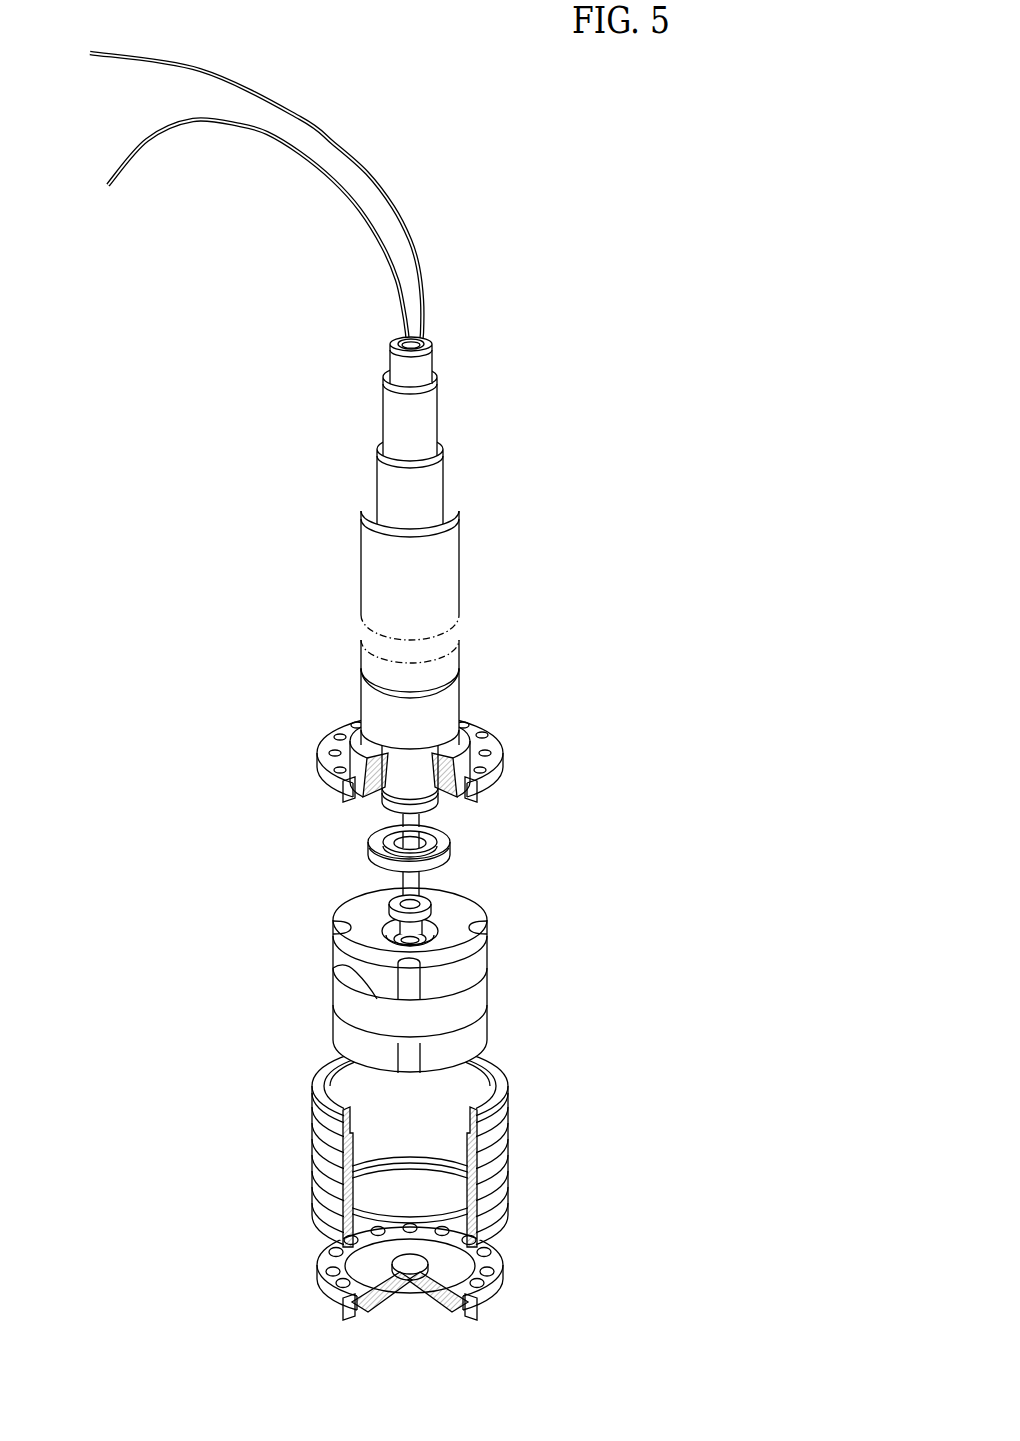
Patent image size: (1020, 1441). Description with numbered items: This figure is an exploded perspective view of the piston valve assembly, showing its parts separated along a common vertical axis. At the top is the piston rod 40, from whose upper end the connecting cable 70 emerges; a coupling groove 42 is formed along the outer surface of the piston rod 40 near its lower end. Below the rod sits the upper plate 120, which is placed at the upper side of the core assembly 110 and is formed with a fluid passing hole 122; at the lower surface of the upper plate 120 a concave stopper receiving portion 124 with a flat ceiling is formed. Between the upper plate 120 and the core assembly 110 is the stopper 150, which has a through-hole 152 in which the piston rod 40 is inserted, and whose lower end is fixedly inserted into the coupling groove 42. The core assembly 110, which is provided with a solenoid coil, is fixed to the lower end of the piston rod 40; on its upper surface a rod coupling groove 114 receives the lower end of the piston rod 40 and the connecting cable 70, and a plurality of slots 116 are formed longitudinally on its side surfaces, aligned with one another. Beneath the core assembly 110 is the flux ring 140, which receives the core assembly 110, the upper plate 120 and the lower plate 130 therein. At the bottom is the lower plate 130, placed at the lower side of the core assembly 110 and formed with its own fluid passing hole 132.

The piston rod 40 is at (460, 563).
The coupling groove 42 is at (462, 800).
The connecting cable 70 is at (368, 878).
The core assembly 110 is at (332, 983).
The rod coupling groove 114 is at (430, 918).
The slot 116 is at (325, 916).
The upper plate 120 is at (318, 760).
The fluid passing hole 122 is at (342, 728).
The stopper receiving portion 124 is at (478, 723).
The lower plate 130 is at (320, 1299).
The fluid passing hole 132 is at (508, 1275).
The flux ring 140 is at (510, 1112).
The stopper 150 is at (458, 849).
The through-hole 152 is at (368, 833).